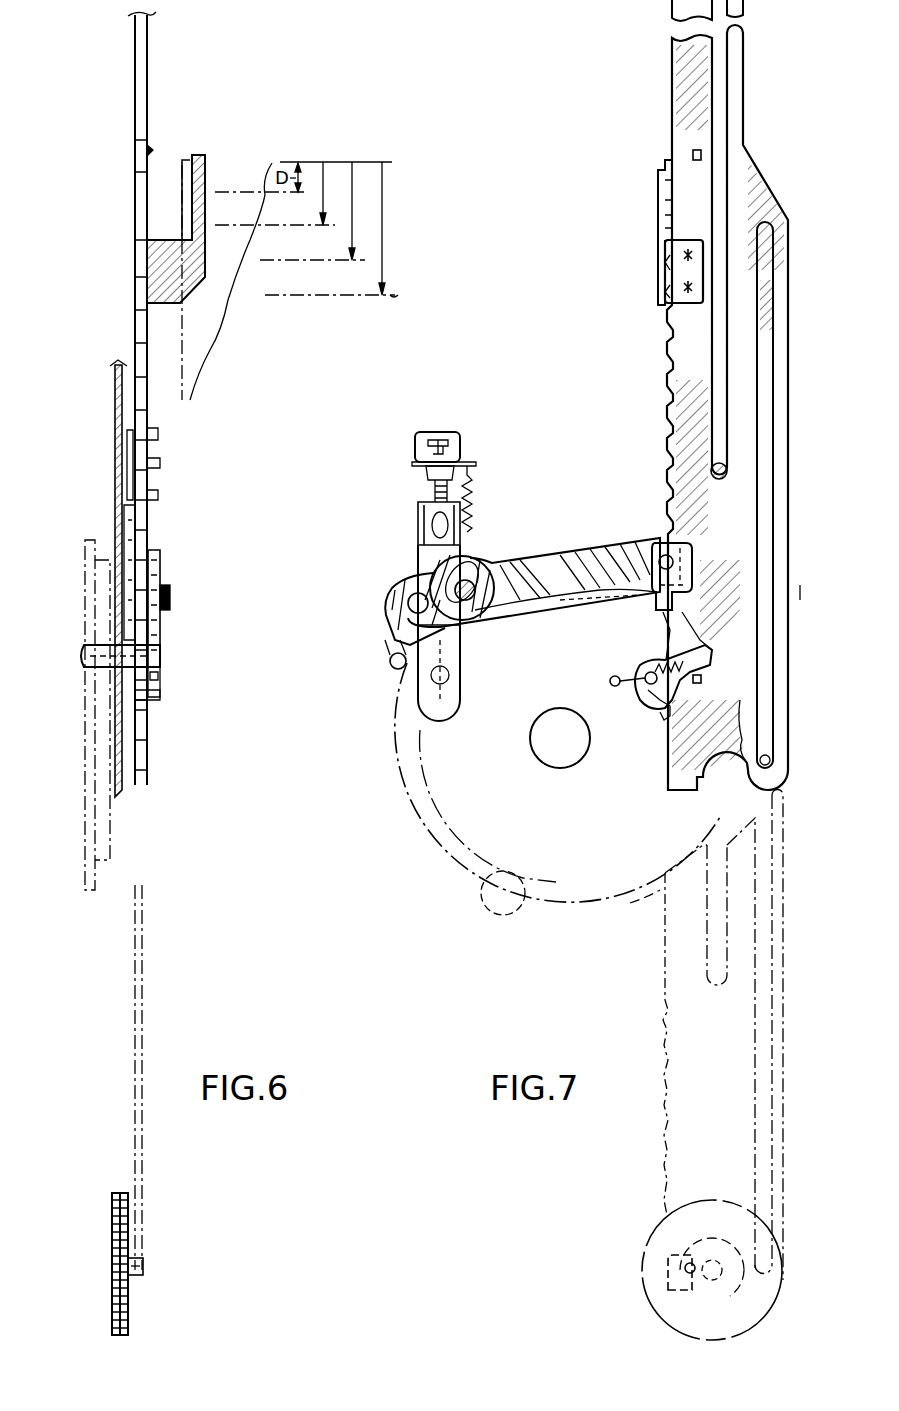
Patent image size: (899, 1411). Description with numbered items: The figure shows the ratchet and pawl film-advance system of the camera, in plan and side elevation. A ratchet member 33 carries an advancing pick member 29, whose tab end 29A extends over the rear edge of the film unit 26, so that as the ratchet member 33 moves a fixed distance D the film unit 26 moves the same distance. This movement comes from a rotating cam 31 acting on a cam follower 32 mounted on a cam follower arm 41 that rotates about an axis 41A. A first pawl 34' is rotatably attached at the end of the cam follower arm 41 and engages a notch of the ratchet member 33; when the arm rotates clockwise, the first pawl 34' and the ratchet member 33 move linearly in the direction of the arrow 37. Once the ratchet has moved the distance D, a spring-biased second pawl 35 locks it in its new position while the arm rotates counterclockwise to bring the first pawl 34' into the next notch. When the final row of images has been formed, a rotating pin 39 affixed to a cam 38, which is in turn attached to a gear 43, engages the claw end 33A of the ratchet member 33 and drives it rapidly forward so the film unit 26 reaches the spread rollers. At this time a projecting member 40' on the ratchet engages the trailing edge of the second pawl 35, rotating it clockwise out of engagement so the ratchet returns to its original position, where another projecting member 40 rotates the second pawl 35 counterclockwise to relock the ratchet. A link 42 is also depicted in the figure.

In FIG. 6, the film unit 26 is at (258, 170).
In FIG. 6, the advancing pick member 29 is at (210, 170).
In FIG. 7, the advancing pick member 29 is at (658, 196).
In FIG. 6, the tab end 29A is at (203, 150).
In FIG. 6, the rotating cam 31 is at (85, 548).
In FIG. 7, the rotating cam 31 is at (400, 790).
In FIG. 6, the cam follower 32 is at (80, 652).
In FIG. 7, the cam follower 32 is at (395, 664).
In FIG. 6, the ratchet member 33 is at (135, 213).
In FIG. 7, the ratchet member 33 is at (745, 530).
In FIG. 7, the claw end 33A is at (655, 795).
In FIG. 7, the first pawl 34' is at (607, 617).
In FIG. 6, the second pawl 35 is at (160, 697).
In FIG. 7, the second pawl 35 is at (646, 700).
In FIG. 7, the arrow 37 is at (800, 610).
In FIG. 6, the cam 38 is at (140, 1220).
In FIG. 6, the rotating pin 39 is at (143, 1266).
In FIG. 7, the rotating pin 39 is at (686, 1268).
In FIG. 7, the projecting member 40 is at (692, 676).
In FIG. 7, the projecting member 40' is at (659, 135).
In FIG. 7, the cam follower arm 41 is at (546, 575).
In FIG. 7, the axis 41A is at (410, 602).
In FIG. 7, the link 42 is at (690, 582).
In FIG. 6, the gear 43 is at (112, 1220).
In FIG. 7, the gear 43 is at (650, 1235).